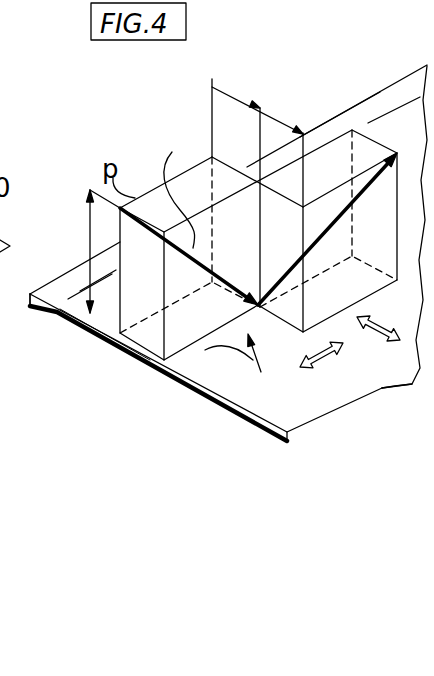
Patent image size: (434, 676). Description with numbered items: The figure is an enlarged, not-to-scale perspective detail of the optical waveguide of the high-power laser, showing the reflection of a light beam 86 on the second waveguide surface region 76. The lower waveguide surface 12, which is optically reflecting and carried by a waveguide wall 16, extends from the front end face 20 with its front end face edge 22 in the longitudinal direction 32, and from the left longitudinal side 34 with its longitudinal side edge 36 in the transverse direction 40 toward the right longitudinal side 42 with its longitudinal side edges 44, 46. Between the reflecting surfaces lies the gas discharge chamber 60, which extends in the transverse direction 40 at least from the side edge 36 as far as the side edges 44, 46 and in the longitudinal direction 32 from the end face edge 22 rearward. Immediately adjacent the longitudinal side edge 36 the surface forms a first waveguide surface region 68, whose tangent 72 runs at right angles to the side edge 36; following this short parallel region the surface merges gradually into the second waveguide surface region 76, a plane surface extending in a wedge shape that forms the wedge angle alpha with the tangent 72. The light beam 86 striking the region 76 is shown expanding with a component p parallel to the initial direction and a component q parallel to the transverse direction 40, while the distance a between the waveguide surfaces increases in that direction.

The lower waveguide surface 12 is at (292, 408).
The waveguide wall 16 is at (33, 308).
The front end face 20 is at (107, 358).
The front end face edge 22 is at (137, 374).
The longitudinal direction 32 is at (358, 368).
The left longitudinal side 34 is at (321, 114).
The longitudinal side edge 36 is at (392, 82).
The transverse direction 40 is at (404, 310).
The right longitudinal side 42 is at (0, 68).
The longitudinal side edge 44 is at (10, 448).
The longitudinal side edge 46 is at (22, 113).
The gas discharge chamber 60 is at (139, 175).
The first waveguide surface region 68 is at (64, 291).
The tangent 72 is at (205, 352).
The second waveguide surface region 76 is at (383, 388).
The light beam 86 is at (182, 183).